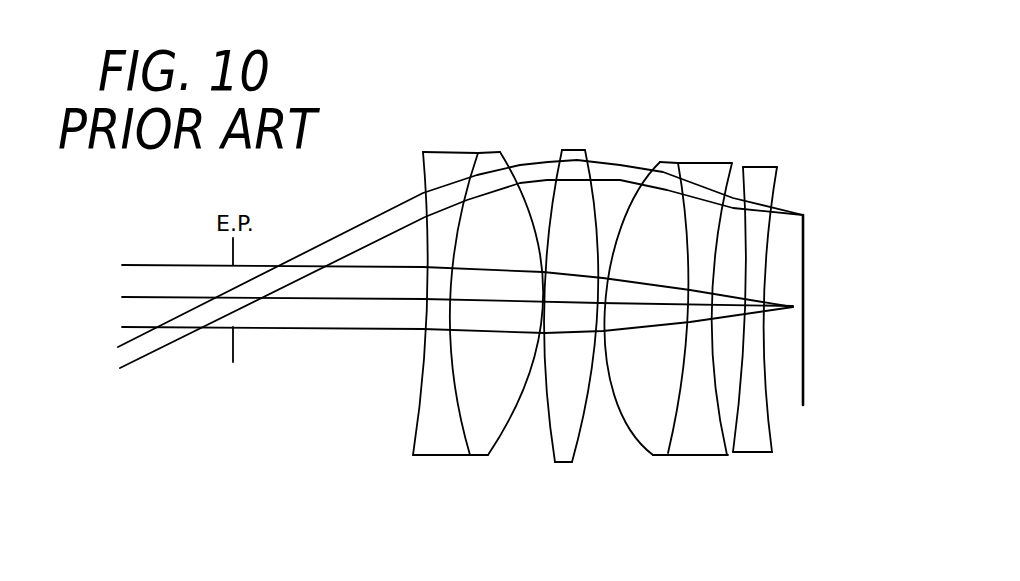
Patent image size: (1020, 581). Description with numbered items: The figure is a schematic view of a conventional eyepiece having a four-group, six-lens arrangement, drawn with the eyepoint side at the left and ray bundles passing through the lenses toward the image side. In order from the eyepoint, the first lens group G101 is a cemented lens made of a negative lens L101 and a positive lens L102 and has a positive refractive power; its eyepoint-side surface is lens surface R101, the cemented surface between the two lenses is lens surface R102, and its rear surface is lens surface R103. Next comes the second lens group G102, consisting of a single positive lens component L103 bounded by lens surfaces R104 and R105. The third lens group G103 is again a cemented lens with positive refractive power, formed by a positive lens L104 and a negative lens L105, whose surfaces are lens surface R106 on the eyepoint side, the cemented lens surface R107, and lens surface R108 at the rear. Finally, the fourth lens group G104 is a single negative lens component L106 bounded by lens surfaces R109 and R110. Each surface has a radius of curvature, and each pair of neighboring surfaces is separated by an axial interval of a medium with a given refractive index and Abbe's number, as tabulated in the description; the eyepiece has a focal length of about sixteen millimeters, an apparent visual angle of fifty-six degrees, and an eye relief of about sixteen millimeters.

The first lens group G101 is at (525, 48).
The second lens group G102 is at (602, 48).
The third lens group G103 is at (740, 48).
The fourth lens group G104 is at (827, 48).
The negative lens L101 is at (431, 302).
The positive lens L102 is at (503, 318).
The single positive lens component L103 is at (576, 302).
The positive lens L104 is at (657, 304).
The negative lens L105 is at (705, 305).
The single negative lens component L106 is at (791, 306).
The lens surface R101 is at (422, 200).
The lens surface R102 is at (472, 164).
The lens surface R103 is at (520, 168).
The lens surface R104 is at (549, 160).
The lens surface R105 is at (600, 185).
The lens surface R106 is at (627, 212).
The lens surface R107 is at (685, 207).
The lens surface R108 is at (718, 225).
The lens surface R109 is at (746, 225).
The lens surface R110 is at (776, 215).